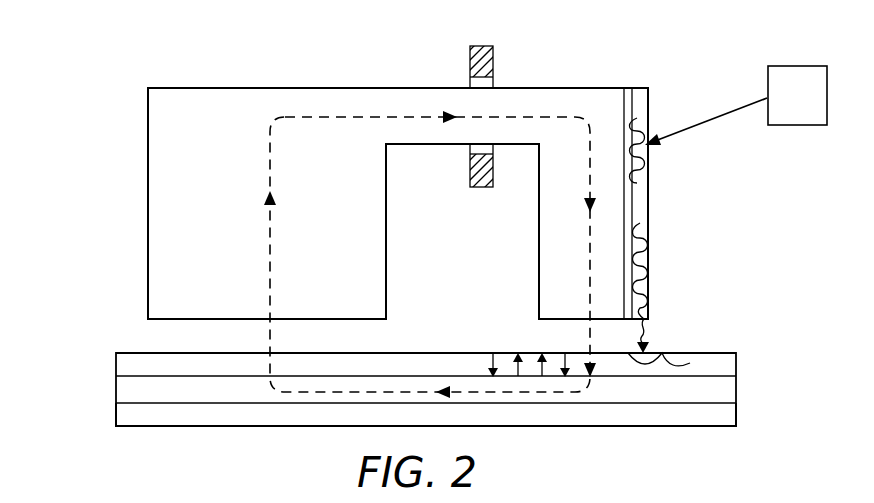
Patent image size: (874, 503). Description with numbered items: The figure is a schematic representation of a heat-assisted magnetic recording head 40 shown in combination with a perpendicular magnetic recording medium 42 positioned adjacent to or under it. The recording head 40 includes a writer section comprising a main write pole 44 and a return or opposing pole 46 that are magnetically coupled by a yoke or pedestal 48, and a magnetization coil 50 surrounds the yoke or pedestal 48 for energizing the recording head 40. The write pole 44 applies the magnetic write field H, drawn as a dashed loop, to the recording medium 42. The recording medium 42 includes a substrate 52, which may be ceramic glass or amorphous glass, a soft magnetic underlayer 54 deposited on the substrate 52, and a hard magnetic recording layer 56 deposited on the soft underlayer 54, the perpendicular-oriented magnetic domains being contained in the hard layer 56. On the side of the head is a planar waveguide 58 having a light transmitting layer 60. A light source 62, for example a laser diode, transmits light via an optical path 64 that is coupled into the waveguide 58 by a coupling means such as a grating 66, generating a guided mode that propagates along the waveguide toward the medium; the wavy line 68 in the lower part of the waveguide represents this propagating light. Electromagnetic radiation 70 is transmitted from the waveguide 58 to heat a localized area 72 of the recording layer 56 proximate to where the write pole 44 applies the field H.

The heat-assisted magnetic recording head 40 is at (118, 89).
The magnetic recording medium 42 is at (90, 351).
The main write pole 44 is at (548, 258).
The return or opposing pole 46 is at (152, 210).
The yoke or pedestal 48 is at (520, 103).
The magnetization coil 50 is at (478, 62).
The substrate 52 is at (130, 418).
The soft magnetic underlayer 54 is at (128, 390).
The hard magnetic recording layer 56 is at (133, 353).
The planar waveguide 58 is at (640, 207).
The light transmitting layer 60 is at (640, 90).
The light source 62 is at (800, 125).
The optical path 64 is at (709, 118).
The grating 66 is at (643, 150).
The heat conduction path 68 is at (620, 278).
The electromagnetic radiation 70 is at (647, 336).
The localized area 72 is at (690, 363).
The magnetic write field H is at (270, 172).